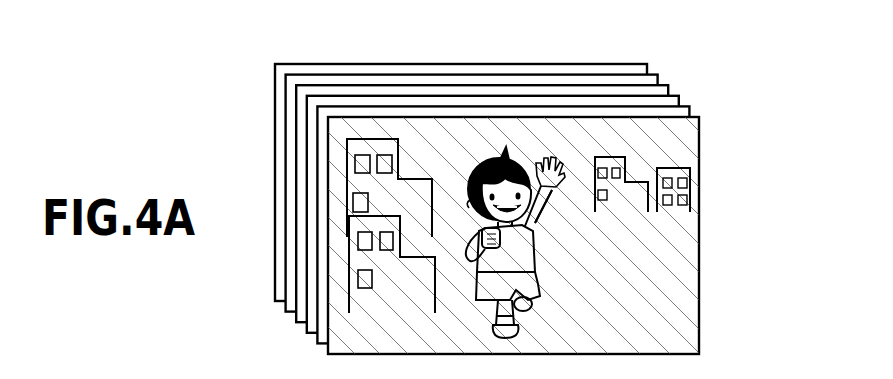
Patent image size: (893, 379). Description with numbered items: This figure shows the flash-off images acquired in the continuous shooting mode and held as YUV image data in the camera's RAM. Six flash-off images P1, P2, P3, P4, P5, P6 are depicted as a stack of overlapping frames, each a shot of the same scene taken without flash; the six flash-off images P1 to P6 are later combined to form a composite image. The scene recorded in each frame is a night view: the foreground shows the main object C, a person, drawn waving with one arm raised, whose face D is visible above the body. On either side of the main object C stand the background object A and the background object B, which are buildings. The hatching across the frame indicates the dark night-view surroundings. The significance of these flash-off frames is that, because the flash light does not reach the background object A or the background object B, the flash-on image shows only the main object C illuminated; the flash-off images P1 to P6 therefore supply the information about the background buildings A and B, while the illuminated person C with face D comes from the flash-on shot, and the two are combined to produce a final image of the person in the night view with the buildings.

The flash-off image P1 is at (650, 67).
The flash-off image P2 is at (662, 82).
The flash-off image P3 is at (668, 90).
The flash-off image P4 is at (680, 100).
The flash-off image P5 is at (690, 112).
The flash-off image P6 is at (692, 145).
The background object A is at (376, 222).
The background object B is at (628, 190).
The main object C is at (508, 142).
The face D is at (547, 212).